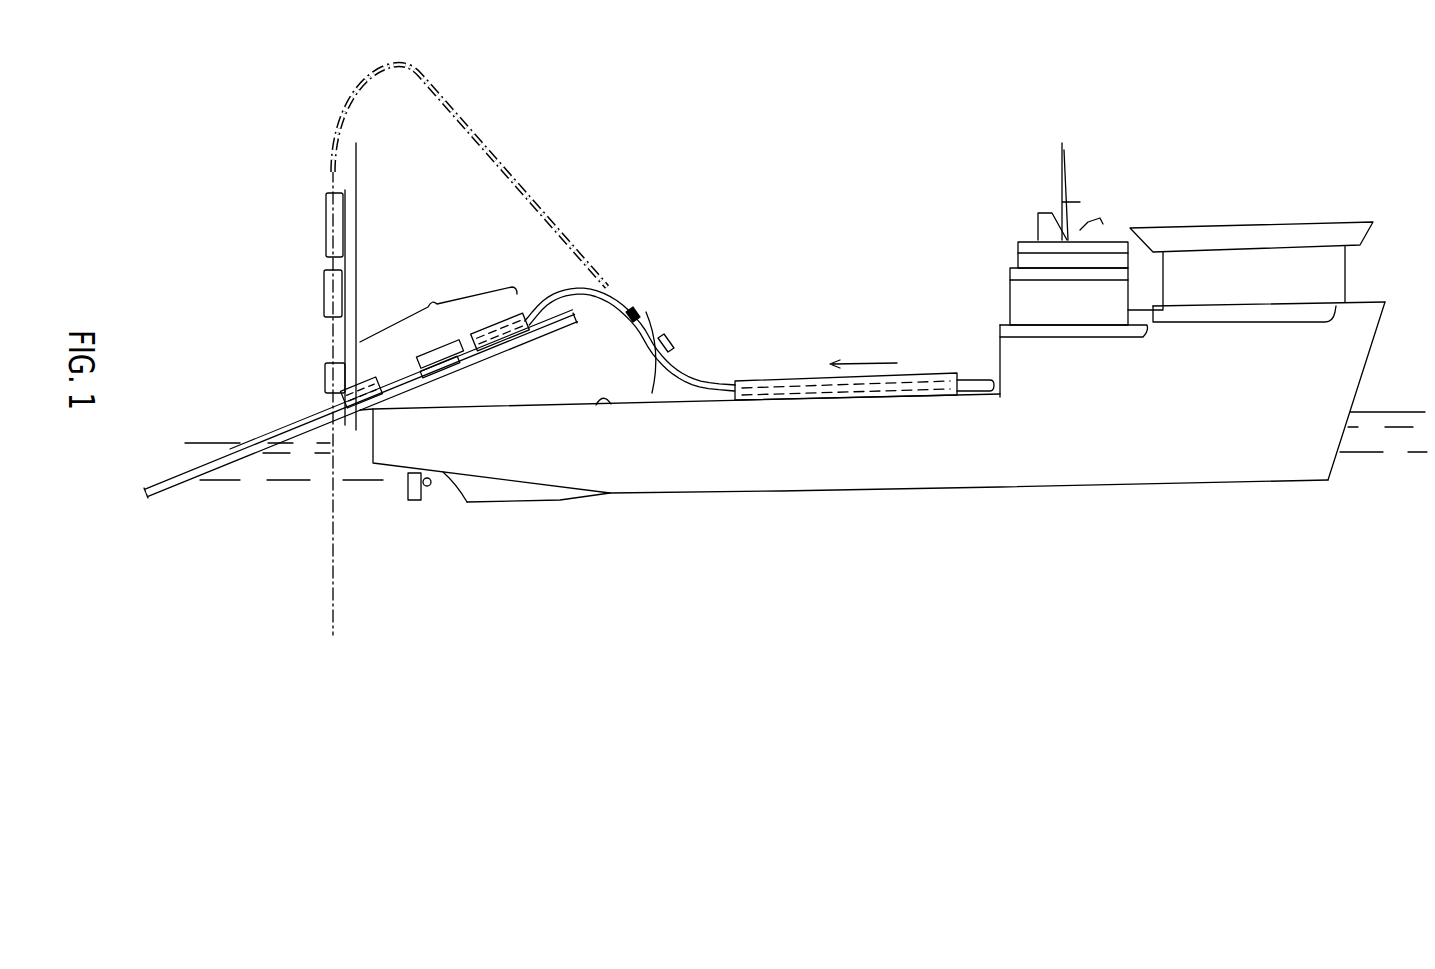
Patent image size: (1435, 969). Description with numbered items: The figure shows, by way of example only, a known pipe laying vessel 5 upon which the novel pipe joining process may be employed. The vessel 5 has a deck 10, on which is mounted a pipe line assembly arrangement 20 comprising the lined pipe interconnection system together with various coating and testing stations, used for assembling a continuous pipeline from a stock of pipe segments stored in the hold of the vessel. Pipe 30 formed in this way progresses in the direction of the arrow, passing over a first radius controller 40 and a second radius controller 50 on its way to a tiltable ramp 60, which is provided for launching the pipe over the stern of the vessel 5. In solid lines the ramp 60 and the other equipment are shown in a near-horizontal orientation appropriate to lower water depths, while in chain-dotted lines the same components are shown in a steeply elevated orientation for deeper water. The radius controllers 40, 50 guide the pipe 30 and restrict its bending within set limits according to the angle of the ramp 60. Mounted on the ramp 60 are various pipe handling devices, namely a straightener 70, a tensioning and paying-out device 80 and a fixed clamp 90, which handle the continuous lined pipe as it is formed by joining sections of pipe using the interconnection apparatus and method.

The pipe laying vessel 5 is at (1187, 460).
The deck 10 is at (600, 405).
The pipe line assembly arrangement 20 is at (733, 338).
The pipe 30 is at (173, 490).
The first radius controller 40 is at (684, 350).
The second radius controller 50 is at (630, 313).
The tiltable ramp 60 is at (524, 348).
The straightener 70 is at (518, 316).
The tensioning and paying-out device 80 is at (447, 368).
The fixed clamp 90 is at (347, 414).